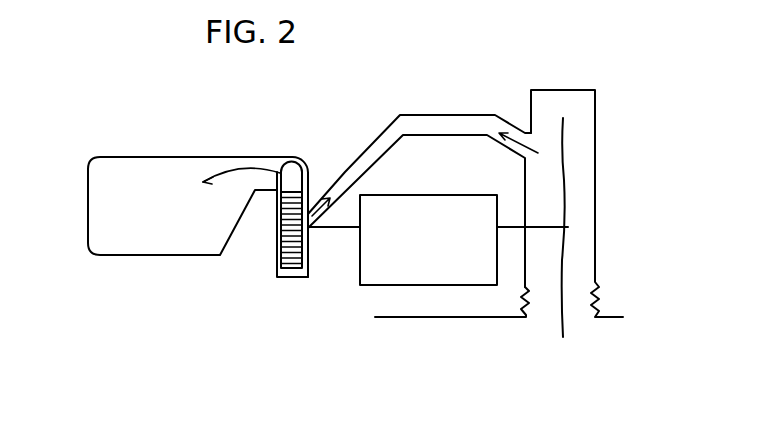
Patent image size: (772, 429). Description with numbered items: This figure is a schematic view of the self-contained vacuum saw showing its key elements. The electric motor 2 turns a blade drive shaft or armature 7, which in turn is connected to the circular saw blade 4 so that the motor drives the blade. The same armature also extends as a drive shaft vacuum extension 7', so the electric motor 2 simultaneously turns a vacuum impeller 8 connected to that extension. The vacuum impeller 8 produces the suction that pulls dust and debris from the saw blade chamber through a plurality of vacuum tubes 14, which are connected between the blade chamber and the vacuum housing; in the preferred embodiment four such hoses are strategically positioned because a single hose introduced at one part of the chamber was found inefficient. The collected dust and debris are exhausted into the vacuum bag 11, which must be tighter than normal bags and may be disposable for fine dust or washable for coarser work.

The electric motor 2 is at (415, 253).
The circular saw blade 4 is at (563, 187).
The blade drive shaft or armature 7 is at (615, 255).
The drive shaft vacuum extension 7' is at (243, 255).
The vacuum impeller 8 is at (277, 252).
The vacuum bag 11 is at (110, 187).
The vacuum tubes 14 is at (447, 125).